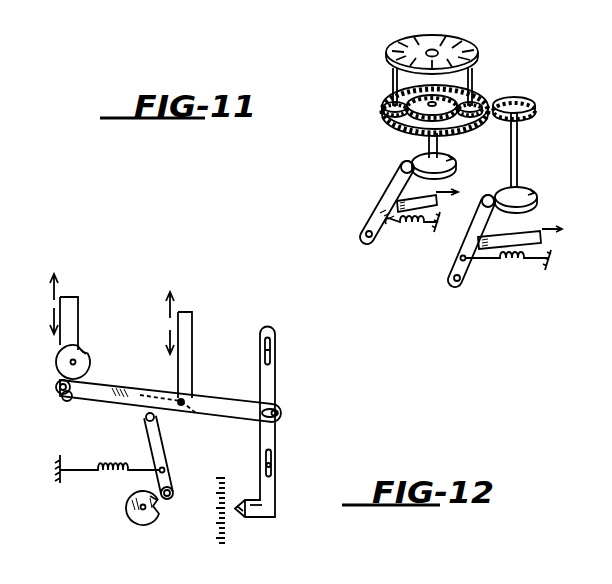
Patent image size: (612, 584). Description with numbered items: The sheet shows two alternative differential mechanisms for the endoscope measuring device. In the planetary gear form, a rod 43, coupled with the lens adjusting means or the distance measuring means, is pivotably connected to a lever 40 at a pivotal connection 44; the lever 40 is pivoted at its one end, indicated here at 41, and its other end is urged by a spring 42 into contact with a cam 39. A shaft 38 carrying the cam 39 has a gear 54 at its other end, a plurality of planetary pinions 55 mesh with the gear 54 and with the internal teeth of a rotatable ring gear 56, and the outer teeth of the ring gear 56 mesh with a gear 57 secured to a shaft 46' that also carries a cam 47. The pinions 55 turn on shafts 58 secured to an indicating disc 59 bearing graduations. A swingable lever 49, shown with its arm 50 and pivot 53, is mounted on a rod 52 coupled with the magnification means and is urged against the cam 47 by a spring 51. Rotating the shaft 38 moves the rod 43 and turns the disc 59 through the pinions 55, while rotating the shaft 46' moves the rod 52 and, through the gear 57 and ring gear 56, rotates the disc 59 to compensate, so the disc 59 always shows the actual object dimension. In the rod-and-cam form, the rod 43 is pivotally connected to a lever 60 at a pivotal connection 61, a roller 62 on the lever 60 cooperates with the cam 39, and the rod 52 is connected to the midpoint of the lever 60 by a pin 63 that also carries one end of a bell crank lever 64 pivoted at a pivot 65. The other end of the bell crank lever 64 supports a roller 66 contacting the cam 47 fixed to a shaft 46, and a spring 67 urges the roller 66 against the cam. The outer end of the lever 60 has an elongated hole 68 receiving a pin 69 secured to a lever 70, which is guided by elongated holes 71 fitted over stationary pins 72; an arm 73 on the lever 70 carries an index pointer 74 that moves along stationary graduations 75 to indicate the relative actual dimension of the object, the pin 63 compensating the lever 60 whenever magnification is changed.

In FIG. 11, the shaft 38 is at (428, 144).
In FIG. 12, the shaft 38 is at (56, 358).
In FIG. 11, the cam 39 is at (455, 165).
In FIG. 12, the cam 39 is at (91, 352).
In FIG. 11, the lever 40 is at (378, 200).
In FIG. 11, the pivot pin 41 is at (362, 231).
In FIG. 11, the spring 42 is at (397, 228).
In FIG. 11, the rod 43 is at (437, 208).
In FIG. 12, the rod 43 is at (78, 312).
In FIG. 11, the pivotal connection 44 is at (397, 190).
In FIG. 12, the shaft 46 is at (158, 517).
In FIG. 11, the shaft 46' is at (537, 150).
In FIG. 11, the cam 47 is at (535, 203).
In FIG. 12, the cam 47 is at (128, 521).
In FIG. 11, the swingable lever 49 is at (472, 292).
In FIG. 11, the lever arm 50 is at (456, 288).
In FIG. 11, the return spring 51 is at (510, 270).
In FIG. 11, the rod 52 is at (545, 245).
In FIG. 12, the rod 52 is at (192, 345).
In FIG. 11, the cam follower roller 53 is at (474, 236).
In FIG. 11, the gear 54 is at (384, 116).
In FIG. 11, the planetary pinions 55 is at (410, 98).
In FIG. 11, the ring gear 56 is at (385, 106).
In FIG. 11, the gear 57 is at (520, 100).
In FIG. 11, the shafts 58 is at (393, 74).
In FIG. 11, the indicating disc 59 is at (448, 40).
In FIG. 12, the lever 60 is at (118, 400).
In FIG. 12, the pivotal connection 61 is at (62, 399).
In FIG. 12, the roller 62 is at (56, 386).
In FIG. 12, the pin 63 is at (183, 406).
In FIG. 12, the bell crank lever 64 is at (160, 460).
In FIG. 12, the pivot 65 is at (149, 428).
In FIG. 12, the roller 66 is at (174, 497).
In FIG. 12, the spring 67 is at (108, 477).
In FIG. 12, the elongated hole 68 is at (282, 417).
In FIG. 12, the pin 69 is at (281, 408).
In FIG. 12, the lever 70 is at (277, 442).
In FIG. 12, the elongated holes 71 is at (278, 490).
In FIG. 12, the pins 72 is at (279, 466).
In FIG. 12, the arm 73 is at (262, 512).
In FIG. 12, the index pointer 74 is at (240, 520).
In FIG. 12, the graduations 75 is at (216, 538).